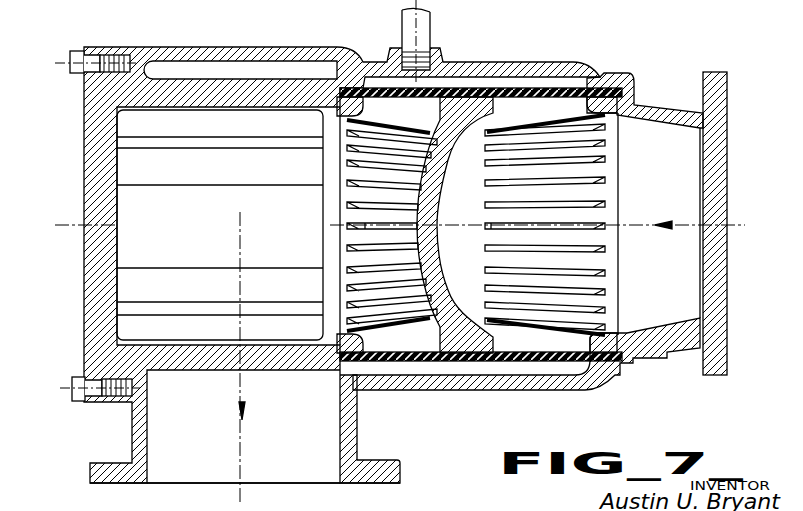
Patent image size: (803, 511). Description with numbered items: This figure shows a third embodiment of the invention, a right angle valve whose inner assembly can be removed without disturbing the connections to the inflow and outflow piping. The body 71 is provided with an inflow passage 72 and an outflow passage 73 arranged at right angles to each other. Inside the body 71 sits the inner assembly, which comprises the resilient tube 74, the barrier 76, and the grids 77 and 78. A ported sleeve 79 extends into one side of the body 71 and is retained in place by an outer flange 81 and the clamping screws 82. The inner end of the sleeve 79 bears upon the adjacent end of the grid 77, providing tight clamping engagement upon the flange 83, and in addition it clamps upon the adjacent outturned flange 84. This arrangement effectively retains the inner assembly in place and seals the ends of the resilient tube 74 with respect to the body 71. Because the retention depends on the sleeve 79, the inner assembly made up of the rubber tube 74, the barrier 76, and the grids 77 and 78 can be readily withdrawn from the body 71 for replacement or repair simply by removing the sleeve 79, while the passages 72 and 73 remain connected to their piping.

The body 71 is at (510, 380).
The inflow passage 72 is at (725, 263).
The outflow passage 73 is at (273, 470).
The resilient tube 74 is at (435, 365).
The barrier 76 is at (430, 262).
The grid 77 is at (343, 212).
The grid 78 is at (612, 258).
The ported sleeve 79 is at (187, 363).
The outer flange 81 is at (85, 201).
The clamping screws 82 is at (82, 377).
The flange 83 is at (617, 367).
The outturned flange 84 is at (330, 367).